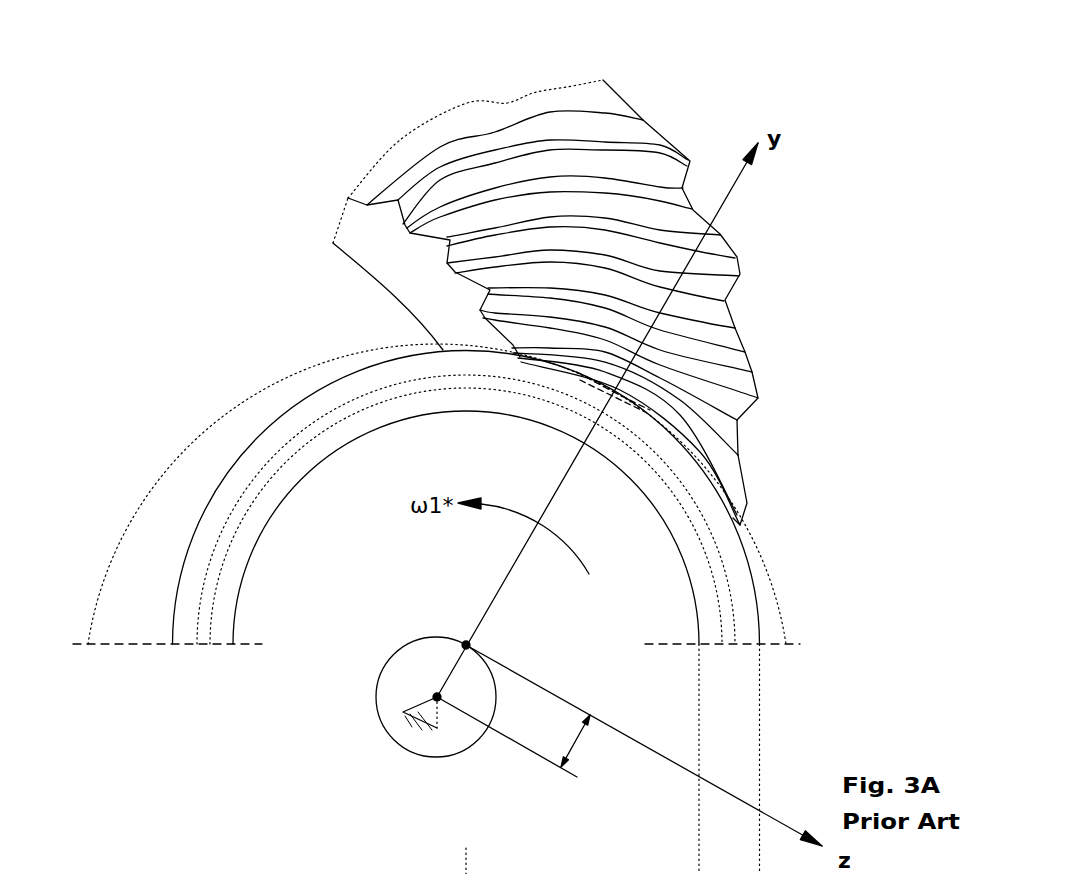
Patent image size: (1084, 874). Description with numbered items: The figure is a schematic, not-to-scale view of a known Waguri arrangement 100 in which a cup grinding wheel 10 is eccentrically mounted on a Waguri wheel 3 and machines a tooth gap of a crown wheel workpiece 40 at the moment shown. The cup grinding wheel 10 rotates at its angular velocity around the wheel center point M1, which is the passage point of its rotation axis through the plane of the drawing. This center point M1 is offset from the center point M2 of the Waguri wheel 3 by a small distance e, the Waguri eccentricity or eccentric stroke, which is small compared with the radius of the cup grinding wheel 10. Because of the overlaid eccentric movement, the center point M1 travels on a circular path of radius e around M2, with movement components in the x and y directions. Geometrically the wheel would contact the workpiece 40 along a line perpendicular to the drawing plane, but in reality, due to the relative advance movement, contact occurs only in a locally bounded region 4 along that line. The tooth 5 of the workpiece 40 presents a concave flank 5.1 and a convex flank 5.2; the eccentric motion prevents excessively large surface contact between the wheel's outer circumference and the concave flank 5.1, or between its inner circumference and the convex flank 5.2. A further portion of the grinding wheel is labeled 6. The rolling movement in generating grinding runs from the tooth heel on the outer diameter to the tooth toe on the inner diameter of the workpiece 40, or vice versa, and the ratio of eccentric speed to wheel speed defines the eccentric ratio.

The gear machining arrangement 100 is at (150, 103).
The workpiece 40 is at (608, 293).
The cup grinding wheel 10 is at (757, 587).
The tooth 5 is at (482, 320).
The tool tooth 6 is at (752, 378).
The convex flank 5.2 is at (732, 465).
The concave flank 5.1 is at (737, 527).
The locally bounded region 4 is at (628, 408).
The Waguri wheel 3 is at (460, 735).
The grinding wheel center point M1 is at (466, 645).
The center point of the Waguri wheel M2 is at (437, 697).
The eccentric stroke e is at (573, 741).